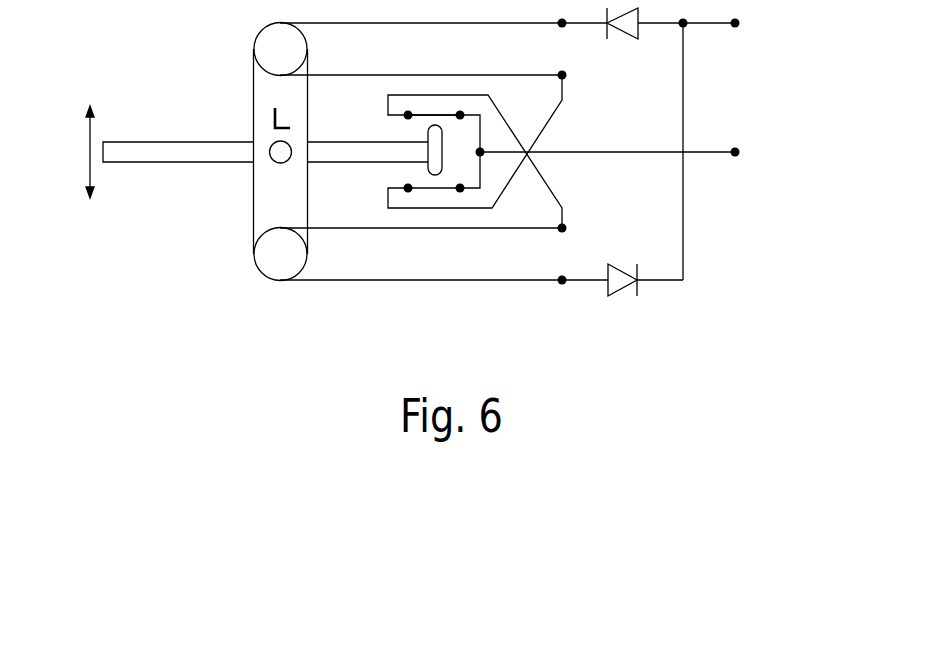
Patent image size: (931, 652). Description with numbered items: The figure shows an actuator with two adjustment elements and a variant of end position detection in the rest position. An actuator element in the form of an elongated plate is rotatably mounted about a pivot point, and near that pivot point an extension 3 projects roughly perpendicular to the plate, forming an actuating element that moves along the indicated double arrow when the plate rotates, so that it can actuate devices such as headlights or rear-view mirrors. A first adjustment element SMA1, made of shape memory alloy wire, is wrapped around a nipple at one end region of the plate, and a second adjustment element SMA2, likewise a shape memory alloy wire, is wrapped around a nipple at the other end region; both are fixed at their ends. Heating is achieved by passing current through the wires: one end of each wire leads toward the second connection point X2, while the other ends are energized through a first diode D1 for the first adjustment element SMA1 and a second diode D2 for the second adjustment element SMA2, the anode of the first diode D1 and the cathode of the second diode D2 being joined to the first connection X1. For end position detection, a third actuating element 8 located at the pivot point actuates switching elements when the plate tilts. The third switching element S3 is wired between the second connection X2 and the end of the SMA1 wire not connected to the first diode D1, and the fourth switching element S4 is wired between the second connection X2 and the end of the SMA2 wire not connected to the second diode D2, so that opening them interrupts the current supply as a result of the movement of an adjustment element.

The extension 3 is at (163, 153).
The third actuating element 8 is at (337, 147).
The first adjustment element SMA1 is at (421, 49).
The second adjustment element SMA2 is at (421, 254).
The third switching element S3 is at (410, 183).
The fourth switching element S4 is at (410, 123).
The first diode D1 is at (622, 45).
The second diode D2 is at (622, 261).
The first connection X1 is at (735, 24).
The second connection point X2 is at (633, 153).